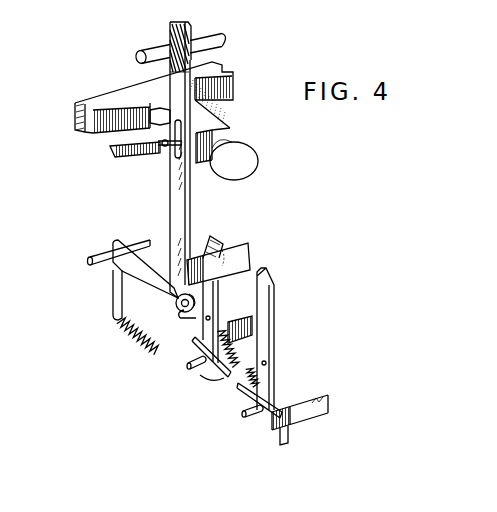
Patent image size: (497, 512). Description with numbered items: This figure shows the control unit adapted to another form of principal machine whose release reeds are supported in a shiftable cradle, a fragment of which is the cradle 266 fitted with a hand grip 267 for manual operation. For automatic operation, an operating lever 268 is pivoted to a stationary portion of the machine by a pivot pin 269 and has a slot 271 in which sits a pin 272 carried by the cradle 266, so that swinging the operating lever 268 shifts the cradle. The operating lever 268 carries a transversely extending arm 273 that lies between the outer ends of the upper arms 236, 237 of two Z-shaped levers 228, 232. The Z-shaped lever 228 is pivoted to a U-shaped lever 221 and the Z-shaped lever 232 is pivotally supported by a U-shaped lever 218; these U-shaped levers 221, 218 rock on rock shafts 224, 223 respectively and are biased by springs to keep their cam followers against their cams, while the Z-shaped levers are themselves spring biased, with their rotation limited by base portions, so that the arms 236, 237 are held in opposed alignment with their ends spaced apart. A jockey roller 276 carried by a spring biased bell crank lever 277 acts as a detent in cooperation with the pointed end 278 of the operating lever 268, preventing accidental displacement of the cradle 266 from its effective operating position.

The U-shaped lever 218 is at (196, 353).
The U-shaped lever 221 is at (318, 418).
The rock shaft 223 is at (195, 368).
The rock shaft 224 is at (245, 415).
The Z-shaped lever 228 is at (267, 332).
The Z-shaped lever 232 is at (185, 340).
The upper arm 236 is at (262, 290).
The upper arm 237 is at (235, 218).
The cradle 266 is at (213, 68).
The hand grip 267 is at (256, 157).
The operating lever 268 is at (175, 213).
The pivot pin 269 is at (152, 52).
The slot 271 is at (175, 158).
The pin 272 is at (160, 146).
The transversely extending arm 273 is at (247, 249).
The jockey roller 276 is at (200, 318).
The bell crank lever 277 is at (115, 273).
The pointed end 278 is at (175, 303).